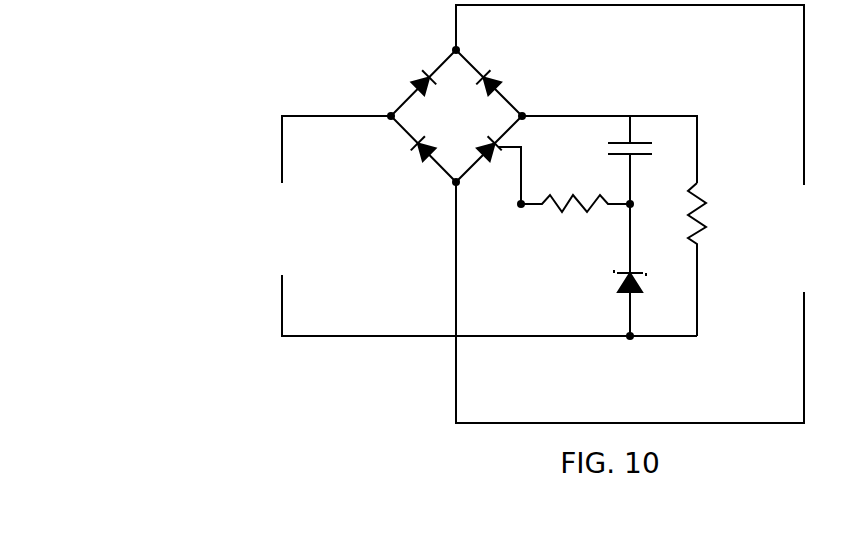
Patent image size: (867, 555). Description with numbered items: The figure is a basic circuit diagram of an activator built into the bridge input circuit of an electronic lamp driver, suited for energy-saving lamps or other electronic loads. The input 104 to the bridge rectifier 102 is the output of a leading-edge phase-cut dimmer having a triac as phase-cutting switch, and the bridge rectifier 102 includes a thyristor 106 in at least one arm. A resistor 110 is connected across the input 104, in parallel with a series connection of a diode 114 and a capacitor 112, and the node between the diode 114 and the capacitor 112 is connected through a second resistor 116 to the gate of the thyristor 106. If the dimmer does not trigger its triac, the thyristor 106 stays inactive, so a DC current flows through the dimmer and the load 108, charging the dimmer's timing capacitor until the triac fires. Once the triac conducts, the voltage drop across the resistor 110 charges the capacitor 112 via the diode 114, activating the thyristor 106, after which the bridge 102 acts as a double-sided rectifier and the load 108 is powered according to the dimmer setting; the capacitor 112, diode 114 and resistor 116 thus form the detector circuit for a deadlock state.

The bridge rectifier 102 is at (479, 127).
The input 104 is at (479, 226).
The thyristor 106 is at (490, 161).
The load 108 is at (641, 214).
The resistor 110 is at (703, 213).
The capacitor 112 is at (607, 143).
The diode 114 is at (618, 291).
The second resistor 116 is at (566, 212).